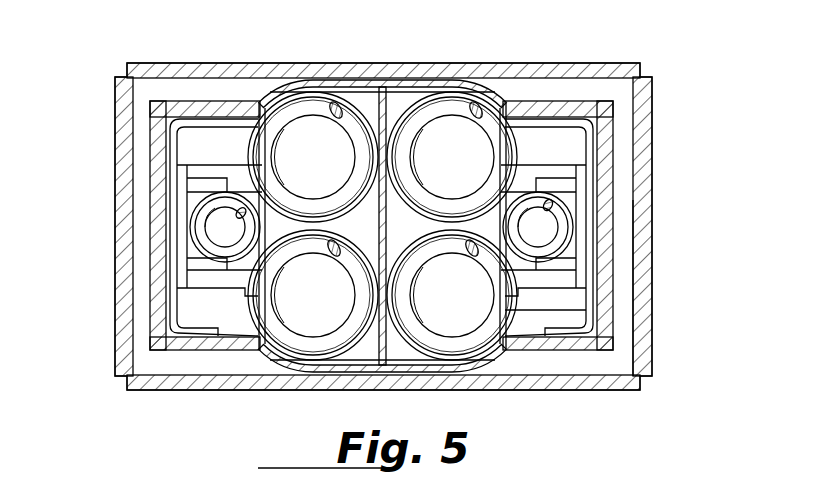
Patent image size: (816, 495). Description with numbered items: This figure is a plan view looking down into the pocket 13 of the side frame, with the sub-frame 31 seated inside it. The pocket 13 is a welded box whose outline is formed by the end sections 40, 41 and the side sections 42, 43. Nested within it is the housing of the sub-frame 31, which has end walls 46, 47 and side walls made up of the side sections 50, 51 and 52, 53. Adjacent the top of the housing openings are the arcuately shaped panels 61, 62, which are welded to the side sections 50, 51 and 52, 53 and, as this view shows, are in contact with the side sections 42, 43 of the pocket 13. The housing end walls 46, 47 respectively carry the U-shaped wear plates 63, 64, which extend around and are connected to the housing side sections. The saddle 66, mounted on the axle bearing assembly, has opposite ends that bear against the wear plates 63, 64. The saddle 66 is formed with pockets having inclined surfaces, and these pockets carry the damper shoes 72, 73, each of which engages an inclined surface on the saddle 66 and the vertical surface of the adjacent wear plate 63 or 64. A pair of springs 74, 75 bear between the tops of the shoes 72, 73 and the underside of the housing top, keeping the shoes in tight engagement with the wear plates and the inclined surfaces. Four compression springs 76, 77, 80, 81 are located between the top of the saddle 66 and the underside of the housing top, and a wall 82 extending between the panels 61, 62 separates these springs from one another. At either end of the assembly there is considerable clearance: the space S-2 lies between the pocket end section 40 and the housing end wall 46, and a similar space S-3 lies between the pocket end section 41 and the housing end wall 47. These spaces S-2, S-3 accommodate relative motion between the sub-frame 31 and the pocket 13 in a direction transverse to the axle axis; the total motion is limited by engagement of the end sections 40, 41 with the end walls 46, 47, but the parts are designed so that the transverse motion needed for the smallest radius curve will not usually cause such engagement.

The pocket 13 is at (657, 152).
The end section 40 is at (121, 106).
The end section 41 is at (648, 103).
The side section 42 is at (257, 66).
The side section 43 is at (225, 384).
The end wall 47 is at (627, 298).
The space S-2 is at (144, 328).
The space S-3 is at (630, 318).
The side section 52 is at (187, 110).
The side section 53 is at (562, 108).
The end wall 46 is at (156, 292).
The sub-frame 31 is at (614, 260).
The side section 50 is at (187, 343).
The side section 51 is at (582, 344).
The U-shaped wear plate 63 is at (171, 148).
The U-shaped wear plate 64 is at (596, 214).
The damper shoe 72 is at (239, 275).
The damper shoe 73 is at (543, 279).
The spring 74 is at (234, 193).
The spring 75 is at (527, 193).
The compression spring 76 is at (272, 148).
The compression spring 77 is at (411, 142).
The compression spring 80 is at (294, 256).
The compression spring 81 is at (412, 274).
The wall 82 is at (386, 212).
The arcuately shaped panel 61 is at (322, 373).
The arcuately shaped panel 62 is at (323, 80).
The saddle 66 is at (533, 311).